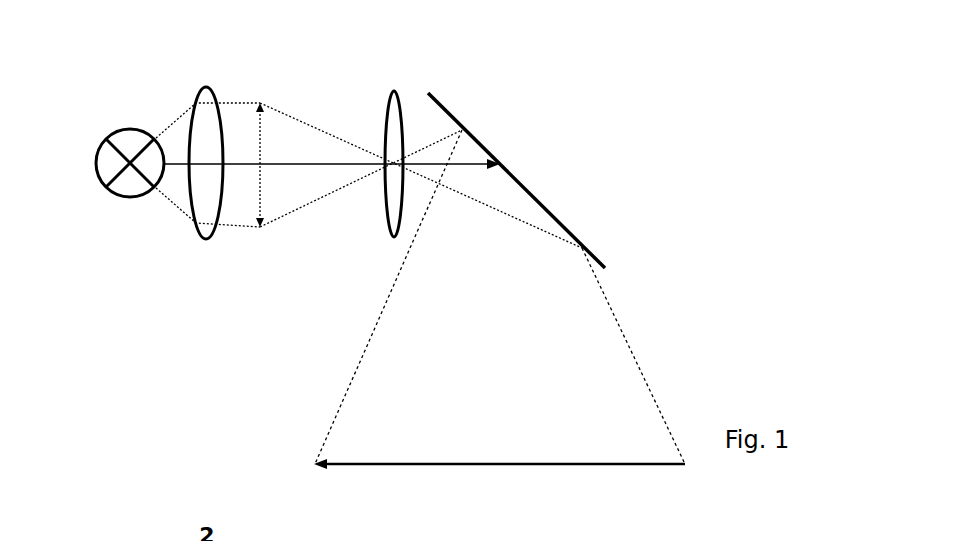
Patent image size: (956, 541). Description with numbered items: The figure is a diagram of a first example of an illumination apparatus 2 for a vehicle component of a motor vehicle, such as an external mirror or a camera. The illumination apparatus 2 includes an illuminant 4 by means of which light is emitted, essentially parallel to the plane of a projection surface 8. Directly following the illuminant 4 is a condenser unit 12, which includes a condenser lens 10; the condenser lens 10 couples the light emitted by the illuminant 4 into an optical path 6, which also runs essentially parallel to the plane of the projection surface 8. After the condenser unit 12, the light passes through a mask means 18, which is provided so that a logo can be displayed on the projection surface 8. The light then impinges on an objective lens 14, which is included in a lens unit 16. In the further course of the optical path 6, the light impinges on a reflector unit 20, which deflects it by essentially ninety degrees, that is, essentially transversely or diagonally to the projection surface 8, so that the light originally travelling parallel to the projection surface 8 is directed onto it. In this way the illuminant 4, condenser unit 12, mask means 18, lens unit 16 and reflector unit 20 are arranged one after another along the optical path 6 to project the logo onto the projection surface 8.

The illumination apparatus 2 is at (118, 107).
The illuminant 4 is at (100, 181).
The optical path 6 is at (326, 164).
The projection surface 8 is at (550, 467).
The condenser lens 10 is at (217, 90).
The condenser unit 12 is at (176, 82).
The objective lens 14 is at (397, 93).
The lens unit 16 is at (372, 248).
The mask means 18 is at (263, 182).
The reflector unit 20 is at (533, 192).